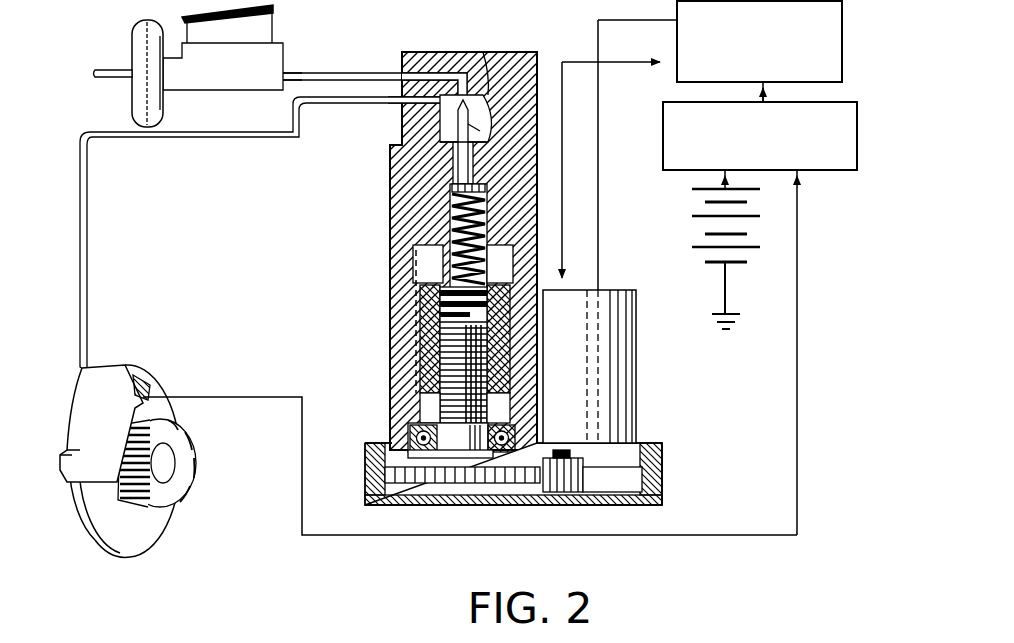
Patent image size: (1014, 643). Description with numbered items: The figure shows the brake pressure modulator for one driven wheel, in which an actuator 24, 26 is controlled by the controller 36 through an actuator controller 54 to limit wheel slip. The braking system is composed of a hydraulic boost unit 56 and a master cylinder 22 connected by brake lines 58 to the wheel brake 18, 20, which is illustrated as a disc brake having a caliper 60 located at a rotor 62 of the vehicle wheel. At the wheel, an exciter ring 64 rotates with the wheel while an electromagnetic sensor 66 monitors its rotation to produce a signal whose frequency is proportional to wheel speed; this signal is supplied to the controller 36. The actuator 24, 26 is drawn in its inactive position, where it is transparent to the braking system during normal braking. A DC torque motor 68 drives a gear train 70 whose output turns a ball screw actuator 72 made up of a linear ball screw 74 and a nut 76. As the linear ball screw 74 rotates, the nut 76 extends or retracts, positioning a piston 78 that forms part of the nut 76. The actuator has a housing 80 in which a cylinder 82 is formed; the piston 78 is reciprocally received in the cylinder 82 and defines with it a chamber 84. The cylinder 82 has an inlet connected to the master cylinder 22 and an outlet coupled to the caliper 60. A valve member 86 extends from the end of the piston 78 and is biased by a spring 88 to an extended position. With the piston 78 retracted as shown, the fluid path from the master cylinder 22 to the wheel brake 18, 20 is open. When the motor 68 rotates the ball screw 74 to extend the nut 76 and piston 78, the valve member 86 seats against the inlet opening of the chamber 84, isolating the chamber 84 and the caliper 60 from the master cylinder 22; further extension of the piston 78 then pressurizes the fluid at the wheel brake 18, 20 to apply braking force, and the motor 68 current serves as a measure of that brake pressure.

The wheel brake 18 is at (162, 440).
The wheel brake 20 is at (162, 440).
The master cylinder 22 is at (253, 66).
The actuator 24 is at (370, 251).
The actuator 26 is at (370, 238).
The controller 36 is at (684, 122).
The actuator controller 54 is at (833, 36).
The hydraulic boost unit 56 is at (143, 63).
The brake lines 58 is at (207, 137).
The caliper 60 is at (65, 482).
The rotor 62 is at (132, 523).
The exciter ring 64 is at (183, 447).
The electromagnetic sensor 66 is at (178, 338).
The DC torque motor 68 is at (615, 400).
The gear train 70 is at (434, 476).
The ball screw actuator 72 is at (417, 322).
The linear ball screw 74 is at (438, 367).
The nut 76 is at (389, 410).
The piston 78 is at (389, 207).
The housing 80 is at (520, 175).
The cylinder 82 is at (454, 113).
The chamber 84 is at (483, 52).
The valve member 86 is at (466, 129).
The spring 88 is at (500, 204).